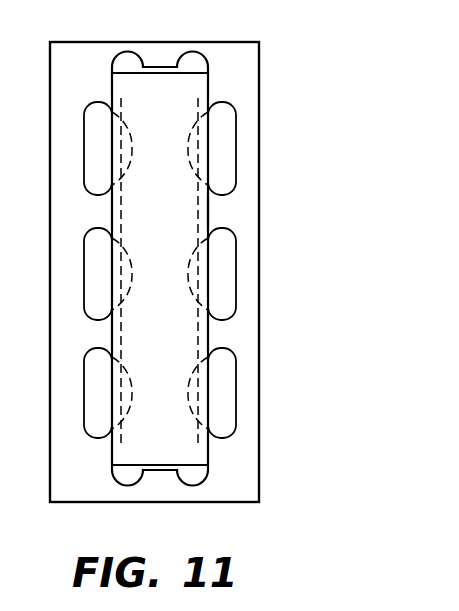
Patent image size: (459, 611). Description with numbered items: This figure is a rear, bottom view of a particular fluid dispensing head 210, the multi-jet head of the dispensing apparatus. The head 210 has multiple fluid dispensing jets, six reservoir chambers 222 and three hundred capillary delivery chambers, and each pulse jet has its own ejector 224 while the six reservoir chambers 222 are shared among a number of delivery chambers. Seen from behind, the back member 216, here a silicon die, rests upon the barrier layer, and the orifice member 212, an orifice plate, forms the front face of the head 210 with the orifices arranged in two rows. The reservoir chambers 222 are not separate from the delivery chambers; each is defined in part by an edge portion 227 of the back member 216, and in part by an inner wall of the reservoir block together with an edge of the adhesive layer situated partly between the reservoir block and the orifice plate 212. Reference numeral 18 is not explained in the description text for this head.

The plate 18 is at (243, 63).
The fluid dispensing head 210 is at (276, 248).
The orifice member 212 is at (223, 297).
The back member 216 is at (180, 336).
The reservoir chamber 222 is at (220, 133).
The ejector 224 is at (198, 272).
The edge portion 227 is at (207, 213).